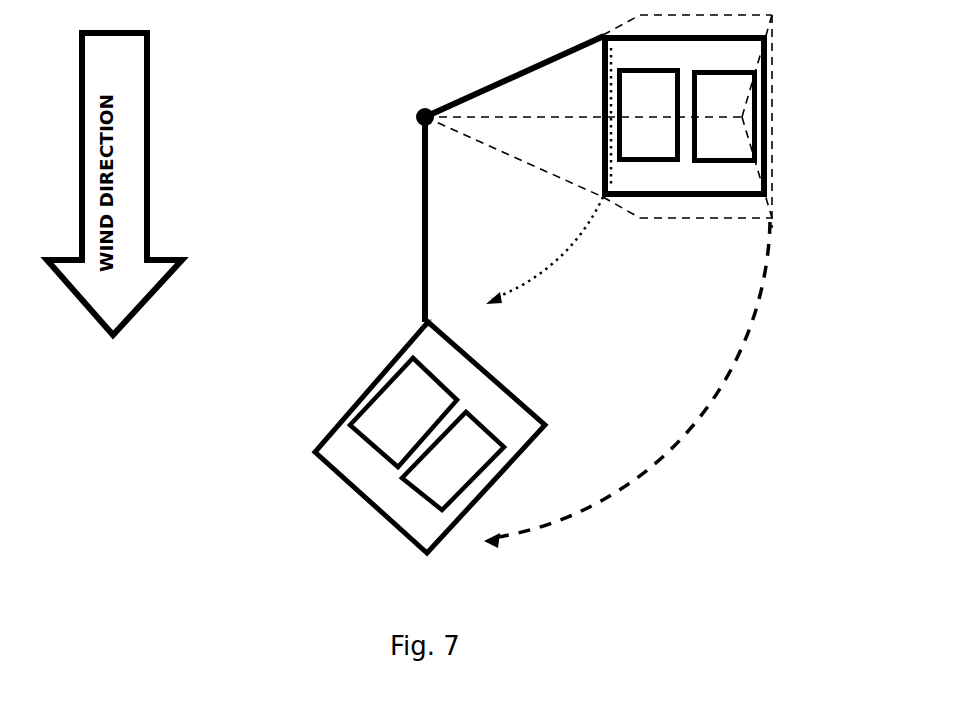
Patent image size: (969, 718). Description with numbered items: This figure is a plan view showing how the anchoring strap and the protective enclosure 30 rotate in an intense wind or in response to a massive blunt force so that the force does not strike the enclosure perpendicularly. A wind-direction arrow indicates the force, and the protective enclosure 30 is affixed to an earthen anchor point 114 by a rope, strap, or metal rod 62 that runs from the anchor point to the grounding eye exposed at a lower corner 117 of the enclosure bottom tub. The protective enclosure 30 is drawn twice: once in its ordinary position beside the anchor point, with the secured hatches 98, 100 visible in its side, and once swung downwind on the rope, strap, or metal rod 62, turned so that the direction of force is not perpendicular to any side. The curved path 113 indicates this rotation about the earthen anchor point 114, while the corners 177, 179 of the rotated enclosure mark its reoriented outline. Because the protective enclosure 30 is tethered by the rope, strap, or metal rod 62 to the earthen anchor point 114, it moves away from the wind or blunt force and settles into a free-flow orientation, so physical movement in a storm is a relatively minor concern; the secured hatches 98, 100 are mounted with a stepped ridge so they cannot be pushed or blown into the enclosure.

The protective enclosure 30 is at (718, 49).
The rope, strap, or metal rod 62 is at (550, 59).
The secured hatch 98 is at (395, 405).
The secured hatch 100 is at (475, 453).
The rotation path 113 is at (580, 252).
The earthen anchor point 114 is at (393, 110).
The lower corner 117 is at (430, 322).
The top corner 177 is at (426, 322).
The bottom corner 179 is at (425, 553).